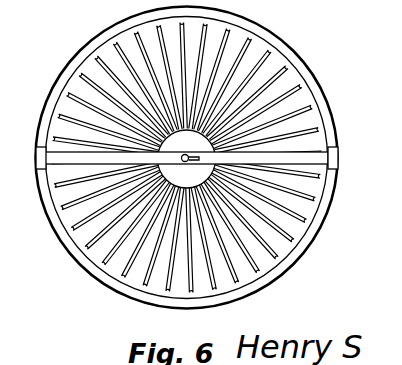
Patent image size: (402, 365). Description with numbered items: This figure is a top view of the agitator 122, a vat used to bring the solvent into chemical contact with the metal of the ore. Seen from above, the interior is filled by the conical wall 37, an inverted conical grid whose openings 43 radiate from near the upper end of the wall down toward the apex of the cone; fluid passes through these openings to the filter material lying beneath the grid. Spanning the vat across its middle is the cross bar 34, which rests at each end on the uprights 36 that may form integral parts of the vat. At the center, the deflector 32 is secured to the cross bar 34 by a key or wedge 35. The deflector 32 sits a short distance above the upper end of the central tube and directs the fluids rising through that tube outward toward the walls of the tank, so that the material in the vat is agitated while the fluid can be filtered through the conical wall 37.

The openings 43 is at (277, 82).
The agitator 122 is at (328, 107).
The conical wall 37 is at (203, 279).
The deflector 32 is at (187, 159).
The cross bar 34 is at (305, 153).
The uprights 36 is at (338, 157).
The key or wedge 35 is at (196, 155).